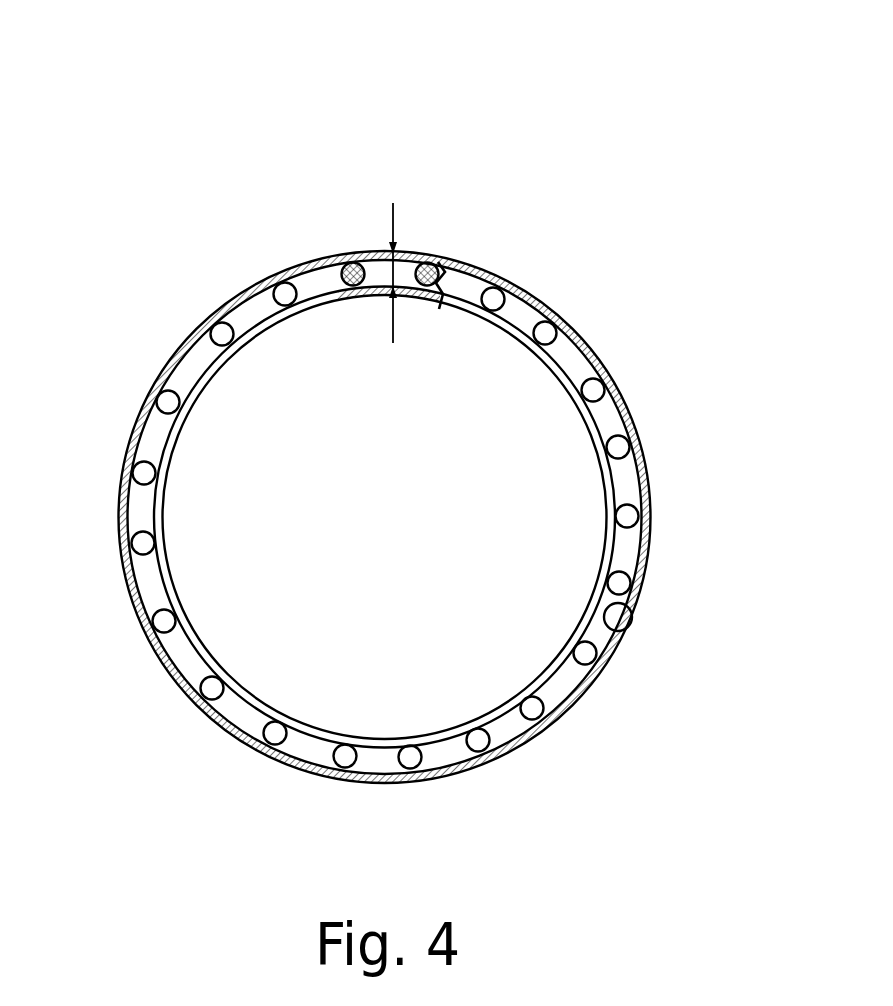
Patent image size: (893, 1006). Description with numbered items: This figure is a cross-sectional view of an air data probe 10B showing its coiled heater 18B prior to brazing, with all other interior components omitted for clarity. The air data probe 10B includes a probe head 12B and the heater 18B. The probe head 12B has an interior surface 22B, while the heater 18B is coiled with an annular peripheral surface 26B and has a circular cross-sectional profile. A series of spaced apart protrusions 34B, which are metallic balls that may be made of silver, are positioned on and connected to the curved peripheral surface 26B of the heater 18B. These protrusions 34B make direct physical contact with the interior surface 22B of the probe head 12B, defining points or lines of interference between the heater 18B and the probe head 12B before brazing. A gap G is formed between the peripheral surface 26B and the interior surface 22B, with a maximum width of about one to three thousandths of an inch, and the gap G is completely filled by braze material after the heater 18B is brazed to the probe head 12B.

The air data probe 10B is at (409, 403).
The probe head 12B is at (617, 648).
The coiled heater 18B is at (605, 472).
The interior surface 22B is at (624, 606).
The peripheral surface 26B is at (647, 486).
The protrusions 34B is at (592, 390).
The gap G is at (390, 272).